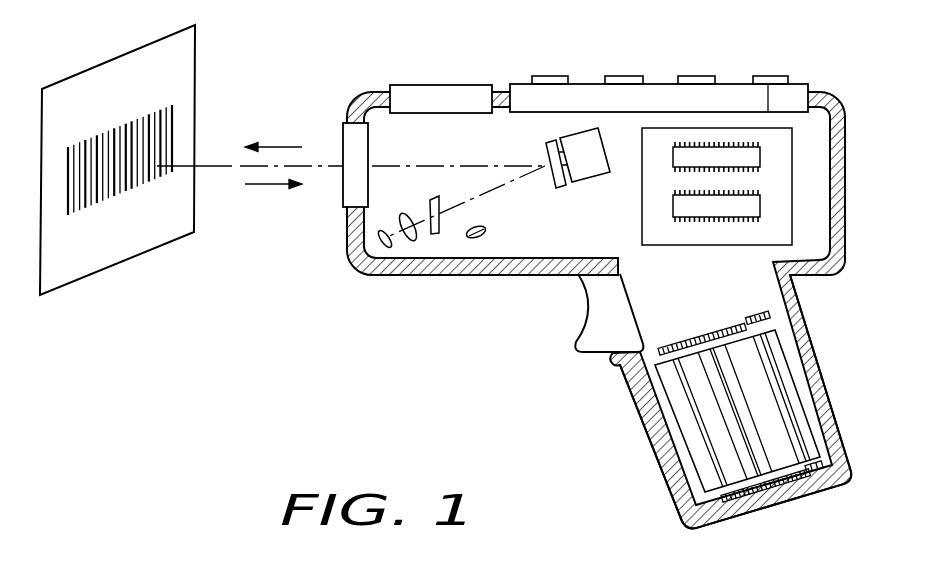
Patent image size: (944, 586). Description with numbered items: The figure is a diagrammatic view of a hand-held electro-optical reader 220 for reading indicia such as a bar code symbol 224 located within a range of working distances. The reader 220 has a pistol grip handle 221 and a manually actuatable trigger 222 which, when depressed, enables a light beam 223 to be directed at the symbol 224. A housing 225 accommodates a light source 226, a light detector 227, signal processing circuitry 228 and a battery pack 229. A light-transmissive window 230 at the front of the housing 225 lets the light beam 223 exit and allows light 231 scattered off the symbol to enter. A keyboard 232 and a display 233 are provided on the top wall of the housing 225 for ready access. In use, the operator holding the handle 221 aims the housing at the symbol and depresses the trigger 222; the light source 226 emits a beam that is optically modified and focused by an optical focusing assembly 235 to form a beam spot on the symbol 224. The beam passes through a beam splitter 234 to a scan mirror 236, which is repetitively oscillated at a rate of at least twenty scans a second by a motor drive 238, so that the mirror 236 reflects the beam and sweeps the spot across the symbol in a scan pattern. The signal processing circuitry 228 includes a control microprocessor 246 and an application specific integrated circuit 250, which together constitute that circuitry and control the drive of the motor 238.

The electro-optical reader 220 is at (456, 360).
The pistol grip handle 221 is at (662, 481).
The trigger 222 is at (591, 344).
The light beam 223 is at (279, 146).
The bar code symbol 224 is at (158, 108).
The housing 225 is at (846, 256).
The light source 226 is at (381, 242).
The light detector 227 is at (486, 236).
The signal processing circuitry 228 is at (765, 155).
The battery pack 229 is at (773, 393).
The light-transmissive window 230 is at (345, 122).
The scattered light 231 is at (267, 186).
The keyboard 232 is at (722, 92).
The display 233 is at (442, 85).
The beam splitter 234 is at (438, 229).
The optical focusing assembly 235 is at (414, 240).
The scan mirror 236 is at (545, 160).
The motor drive 238 is at (592, 182).
The control microprocessor 246 is at (746, 152).
The application specific integrated circuit 250 is at (761, 203).